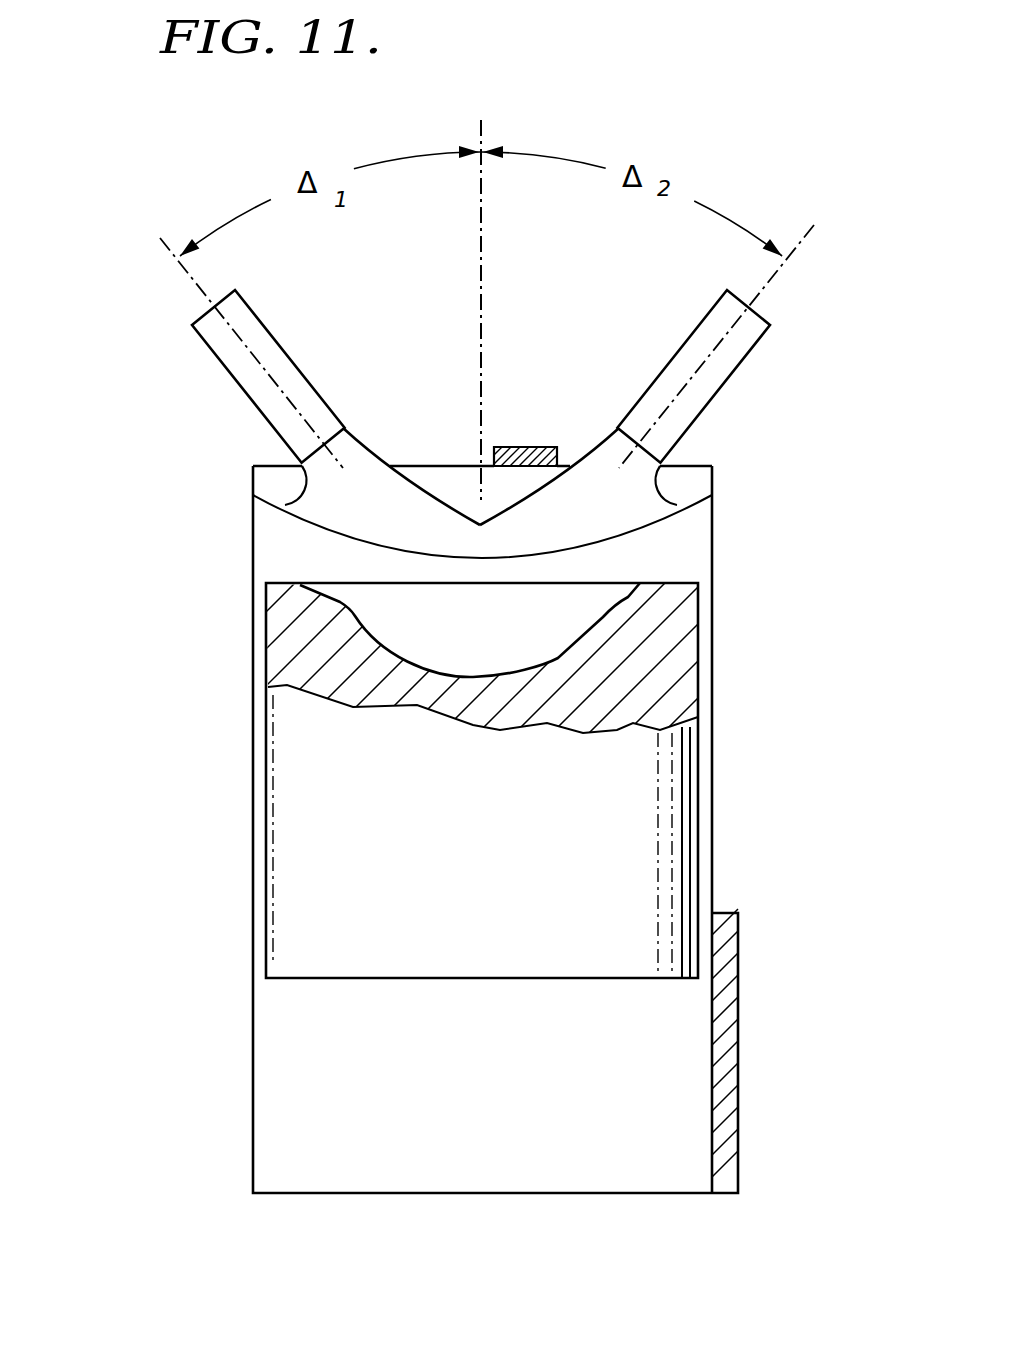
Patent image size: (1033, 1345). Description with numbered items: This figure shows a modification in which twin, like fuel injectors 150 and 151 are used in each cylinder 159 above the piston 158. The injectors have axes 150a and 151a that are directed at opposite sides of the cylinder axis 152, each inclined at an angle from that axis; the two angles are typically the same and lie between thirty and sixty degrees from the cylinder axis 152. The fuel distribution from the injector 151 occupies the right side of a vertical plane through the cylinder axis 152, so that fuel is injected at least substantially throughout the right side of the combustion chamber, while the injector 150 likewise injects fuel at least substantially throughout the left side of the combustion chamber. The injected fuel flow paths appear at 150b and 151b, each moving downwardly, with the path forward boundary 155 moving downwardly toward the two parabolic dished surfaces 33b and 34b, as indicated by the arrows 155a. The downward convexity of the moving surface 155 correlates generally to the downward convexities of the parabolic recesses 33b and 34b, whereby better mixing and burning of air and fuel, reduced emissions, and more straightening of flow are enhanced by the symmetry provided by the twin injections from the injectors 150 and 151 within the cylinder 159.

The fuel injector 150 is at (233, 377).
The injector axis 150a is at (191, 278).
The injected fuel flow path 150b is at (382, 476).
The fuel injector 151 is at (704, 408).
The injector axis 151a is at (776, 273).
The injected fuel flow path 151b is at (578, 478).
The cylinder axis 152 is at (481, 275).
The path forward boundary 155 is at (302, 524).
The arrows 155a is at (572, 580).
The parabolic dished surface 33b is at (640, 585).
The parabolic dished surface 34b is at (558, 658).
The piston 158 is at (482, 780).
The cylinder 159 is at (738, 987).